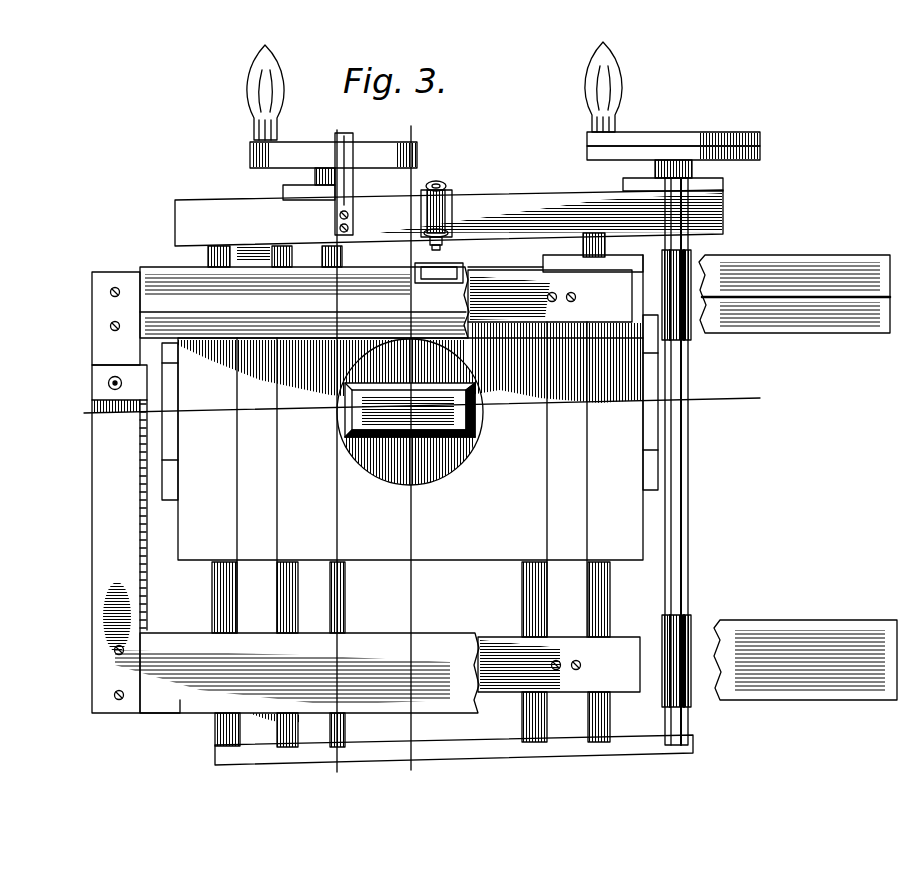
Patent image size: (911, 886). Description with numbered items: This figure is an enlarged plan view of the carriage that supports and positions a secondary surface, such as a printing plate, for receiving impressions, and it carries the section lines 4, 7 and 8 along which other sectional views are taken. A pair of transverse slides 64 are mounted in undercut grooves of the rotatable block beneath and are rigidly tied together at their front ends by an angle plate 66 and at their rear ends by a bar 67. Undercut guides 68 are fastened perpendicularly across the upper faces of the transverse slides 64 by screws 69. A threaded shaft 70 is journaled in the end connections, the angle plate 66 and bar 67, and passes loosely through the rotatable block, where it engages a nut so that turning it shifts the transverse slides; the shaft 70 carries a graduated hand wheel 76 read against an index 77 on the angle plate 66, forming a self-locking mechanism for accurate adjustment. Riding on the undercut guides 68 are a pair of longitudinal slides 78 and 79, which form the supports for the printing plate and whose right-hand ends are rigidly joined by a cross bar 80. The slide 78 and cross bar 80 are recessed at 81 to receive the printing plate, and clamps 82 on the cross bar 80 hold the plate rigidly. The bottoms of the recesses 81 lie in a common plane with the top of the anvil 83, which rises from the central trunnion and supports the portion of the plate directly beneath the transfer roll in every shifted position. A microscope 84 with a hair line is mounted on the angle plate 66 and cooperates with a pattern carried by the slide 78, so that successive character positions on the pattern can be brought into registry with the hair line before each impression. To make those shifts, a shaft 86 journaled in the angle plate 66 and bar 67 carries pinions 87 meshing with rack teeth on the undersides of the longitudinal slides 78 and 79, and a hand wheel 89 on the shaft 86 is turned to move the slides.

The section line 4— 4 is at (421, 408).
The section line 7— 7 is at (422, 449).
The section line 8— 8 is at (372, 783).
The transverse slides 64 is at (227, 597).
The angle plate 66 is at (190, 216).
The bar 67 is at (306, 763).
The undercut guides 68 is at (612, 305).
The screws 69 is at (577, 295).
The shaft 70 is at (328, 252).
The graduated hand wheel 76 is at (280, 152).
The index 77 is at (347, 149).
The longitudinal slide 78 is at (175, 290).
The longitudinal slide 79 is at (170, 703).
The cross bar 80 is at (98, 467).
The work-receiving recess 81 is at (166, 338).
The clamps 82 is at (128, 373).
The anvil 83 is at (373, 425).
The microscope 84 is at (447, 213).
The shaft 86 is at (676, 478).
The pinions 87 is at (690, 328).
The hand wheel 89 is at (718, 119).